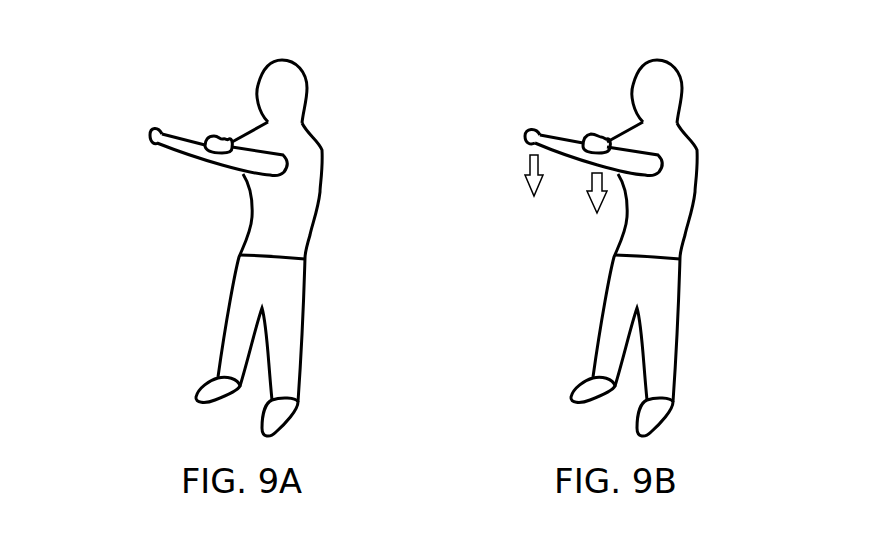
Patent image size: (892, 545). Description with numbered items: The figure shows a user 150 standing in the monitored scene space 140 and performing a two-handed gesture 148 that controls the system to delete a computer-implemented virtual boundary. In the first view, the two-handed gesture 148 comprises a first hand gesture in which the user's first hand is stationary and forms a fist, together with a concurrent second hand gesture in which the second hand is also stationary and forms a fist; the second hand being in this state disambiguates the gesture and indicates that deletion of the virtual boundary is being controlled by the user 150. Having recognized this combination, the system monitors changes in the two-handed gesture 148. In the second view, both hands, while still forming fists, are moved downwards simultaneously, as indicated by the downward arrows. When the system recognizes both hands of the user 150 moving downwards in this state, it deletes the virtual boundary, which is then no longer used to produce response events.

In FIG. 9A, the monitored scene space 140 is at (172, 301).
In FIG. 9B, the monitored scene space 140 is at (530, 324).
In FIG. 9A, the two-handed gesture 148 is at (163, 95).
In FIG. 9B, the two-handed gesture 148 is at (575, 98).
In FIG. 9A, the user 150 is at (298, 60).
In FIG. 9B, the user 150 is at (655, 228).